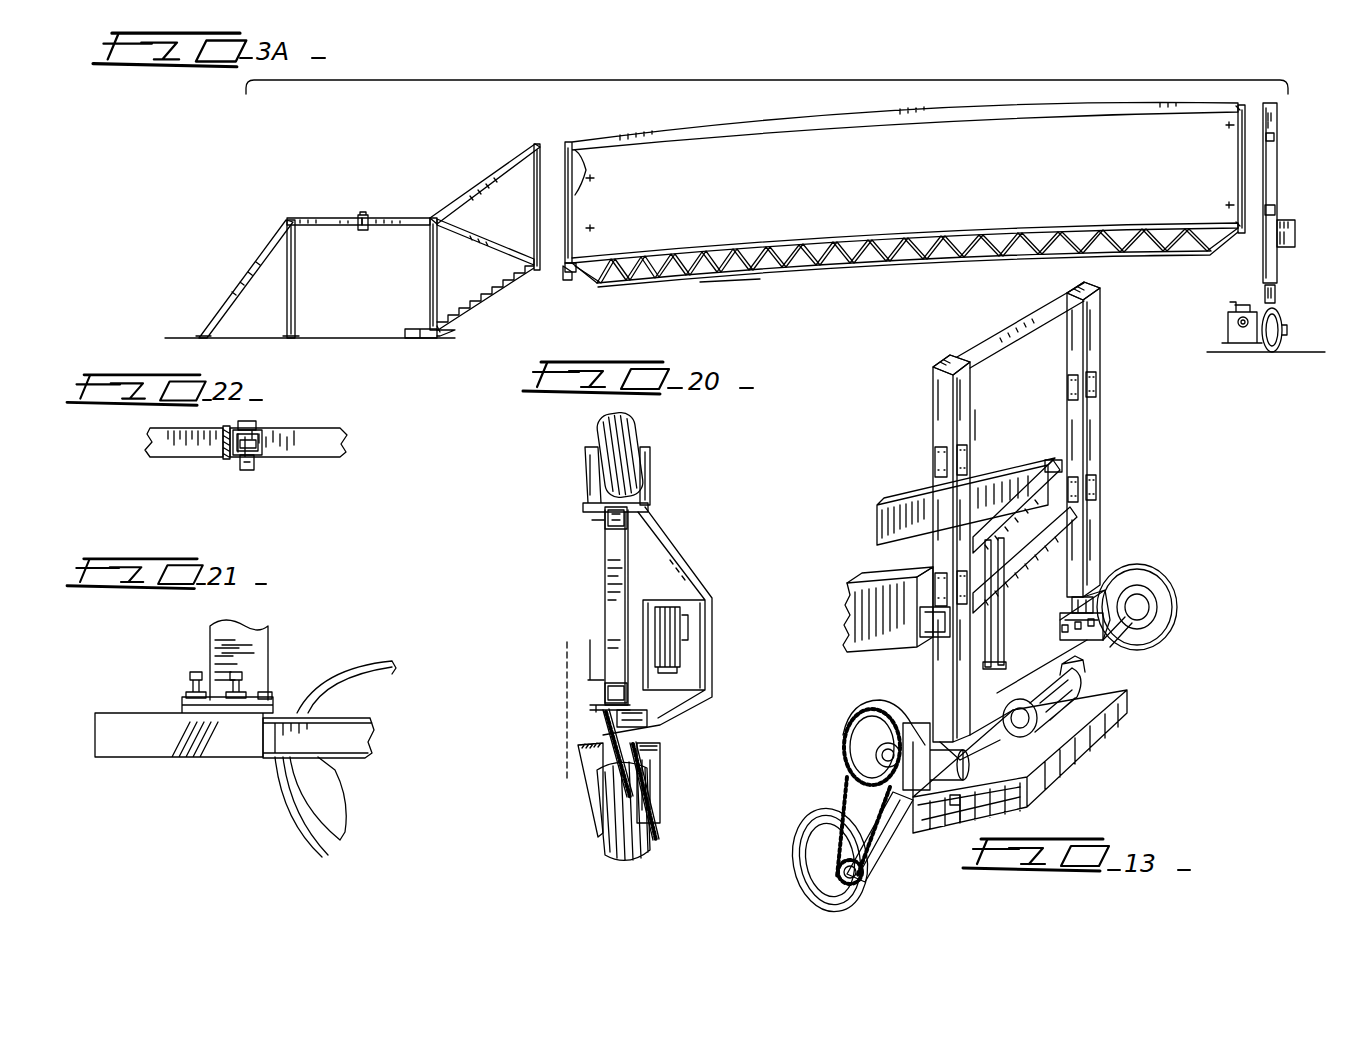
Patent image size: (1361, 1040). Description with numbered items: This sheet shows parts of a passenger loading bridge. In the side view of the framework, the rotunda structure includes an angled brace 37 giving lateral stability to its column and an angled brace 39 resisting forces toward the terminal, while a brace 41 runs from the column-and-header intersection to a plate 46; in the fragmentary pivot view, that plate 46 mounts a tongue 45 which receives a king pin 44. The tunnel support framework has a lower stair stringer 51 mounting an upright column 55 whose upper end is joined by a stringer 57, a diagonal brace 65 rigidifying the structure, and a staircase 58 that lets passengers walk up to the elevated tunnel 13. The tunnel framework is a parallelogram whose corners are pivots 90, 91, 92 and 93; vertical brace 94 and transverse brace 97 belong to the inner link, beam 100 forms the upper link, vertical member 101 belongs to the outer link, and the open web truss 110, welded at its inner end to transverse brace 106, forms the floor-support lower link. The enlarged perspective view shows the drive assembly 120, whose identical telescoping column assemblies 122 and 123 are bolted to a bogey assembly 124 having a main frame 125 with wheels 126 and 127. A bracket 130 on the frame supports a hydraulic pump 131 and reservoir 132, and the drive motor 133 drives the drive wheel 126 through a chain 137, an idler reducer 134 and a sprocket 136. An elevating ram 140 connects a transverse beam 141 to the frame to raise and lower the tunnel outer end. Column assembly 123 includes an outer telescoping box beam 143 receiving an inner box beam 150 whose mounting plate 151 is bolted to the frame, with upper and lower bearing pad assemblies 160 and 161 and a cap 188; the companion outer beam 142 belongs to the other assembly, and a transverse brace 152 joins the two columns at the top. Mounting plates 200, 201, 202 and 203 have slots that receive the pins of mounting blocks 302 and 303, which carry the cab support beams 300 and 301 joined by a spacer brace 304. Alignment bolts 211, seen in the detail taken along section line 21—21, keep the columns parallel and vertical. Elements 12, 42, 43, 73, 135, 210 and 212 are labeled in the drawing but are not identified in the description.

In FIG. 3A, the stairway unit 12 is at (507, 300).
In FIG. 3A, the tunnel 13 is at (846, 283).
In FIG. 3A, the angled brace 37 is at (296, 285).
In FIG. 3A, the angled brace 39 is at (235, 290).
In FIG. 3A, the brace 41 is at (342, 218).
In FIG. 22, the brace 41 is at (202, 456).
In FIG. 3A, the right top rail tube 42 is at (414, 226).
In FIG. 22, the right top rail tube 42 is at (330, 458).
In FIG. 22, the clamp body 43 is at (266, 433).
In FIG. 3A, the king pin 44 is at (366, 217).
In FIG. 22, the king pin 44 is at (248, 429).
In FIG. 22, the tongue 45 is at (247, 420).
In FIG. 22, the plate 46 is at (222, 428).
In FIG. 3A, the lower stair stringer 51 is at (486, 320).
In FIG. 3A, the upright column 55 is at (534, 222).
In FIG. 3A, the stringer 57 is at (494, 168).
In FIG. 3A, the staircase 58 is at (512, 268).
In FIG. 3A, the diagonal brace 65 is at (520, 236).
In FIG. 3A, the foot block 73 is at (411, 328).
In FIG. 3A, the pivot pin 90 is at (583, 150).
In FIG. 3A, the pivot pin 91 is at (1246, 104).
In FIG. 3A, the pivot pins 92 is at (1238, 224).
In FIG. 3A, the pivot 93 is at (582, 259).
In FIG. 3A, the vertical brace 94 is at (578, 208).
In FIG. 3A, the transverse brace 97 is at (572, 282).
In FIG. 3A, the beam 100 is at (845, 95).
In FIG. 3A, the vertical member 101 is at (1238, 175).
In FIG. 3A, the transverse brace 106 is at (562, 272).
In FIG. 3A, the open web truss 110 is at (722, 284).
In FIG. 3A, the drive assembly 120 is at (1284, 177).
In FIG. 3A, the telescoping column assembly 122 is at (1282, 192).
In FIG. 20, the telescoping column assembly 122 is at (590, 522).
In FIG. 13, the telescoping column assembly 122 is at (1103, 456).
In FIG. 20, the telescoping column assembly 123 is at (590, 694).
In FIG. 13, the telescoping column assembly 123 is at (926, 420).
In FIG. 3A, the bogey assembly 124 is at (1230, 341).
In FIG. 13, the bogey assembly 124 is at (1055, 786).
In FIG. 21, the main frame 125 is at (137, 730).
In FIG. 20, the main frame 125 is at (610, 605).
In FIG. 13, the main frame 125 is at (1115, 665).
In FIG. 21, the drive wheel 126 is at (283, 800).
In FIG. 20, the drive wheel 126 is at (620, 858).
In FIG. 13, the drive wheel 126 is at (805, 827).
In FIG. 20, the wheel 127 is at (632, 418).
In FIG. 13, the wheel 127 is at (1141, 566).
In FIG. 20, the bracket 130 is at (712, 679).
In FIG. 13, the bracket 130 is at (1108, 722).
In FIG. 20, the hydraulic pump 131 is at (662, 606).
In FIG. 13, the hydraulic pump 131 is at (1048, 726).
In FIG. 20, the reservoir 132 is at (700, 686).
In FIG. 13, the reservoir 132 is at (1010, 770).
In FIG. 13, the drive motor 133 is at (922, 834).
In FIG. 13, the idler reducer 134 is at (866, 741).
In FIG. 13, the drive chain 135 is at (855, 790).
In FIG. 13, the sprocket 136 is at (866, 878).
In FIG. 13, the chain 137 is at (876, 712).
In FIG. 13, the ram 140 is at (1005, 626).
In FIG. 13, the transverse beam 141 is at (1090, 513).
In FIG. 13, the box beam 142 is at (975, 410).
In FIG. 3A, the outer telescoping box beam 143 is at (1274, 136).
In FIG. 13, the outer telescoping box beam 143 is at (1068, 370).
In FIG. 3A, the inner telescoping box beam 150 is at (1274, 306).
In FIG. 21, the inner telescoping box beam 150 is at (222, 640).
In FIG. 13, the mounting plate 151 is at (1070, 640).
In FIG. 13, the transverse brace 152 is at (1022, 320).
In FIG. 13, the upper bearing pad assembly 160 is at (936, 468).
In FIG. 13, the lower bearing pad assembly 161 is at (933, 566).
In FIG. 13, the cap 188 is at (1092, 285).
In FIG. 20, the mounting plate 200 is at (592, 708).
In FIG. 13, the mounting plate 200 is at (928, 637).
In FIG. 20, the mounting plate 201 is at (590, 642).
In FIG. 20, the mounting plate 202 is at (605, 530).
In FIG. 13, the mounting plate 202 is at (1098, 505).
In FIG. 3A, the mounting plate 203 is at (1296, 231).
In FIG. 20, the mounting plate 203 is at (590, 496).
In FIG. 13, the post lower section 210 is at (1103, 598).
In FIG. 21, the alignment bolts 211 is at (195, 670).
In FIG. 13, the alignment bolts 211 is at (1103, 640).
In FIG. 21, the side bolt 212 is at (272, 696).
In FIG. 13, the support box beam 300 is at (850, 584).
In FIG. 13, the support box beam 301 is at (890, 500).
In FIG. 13, the mounting block 302 is at (895, 568).
In FIG. 13, the mounting block 303 is at (1056, 462).
In FIG. 13, the brace or spacer 304 is at (1050, 470).
In FIG. 20, the section line 21 is at (584, 662).